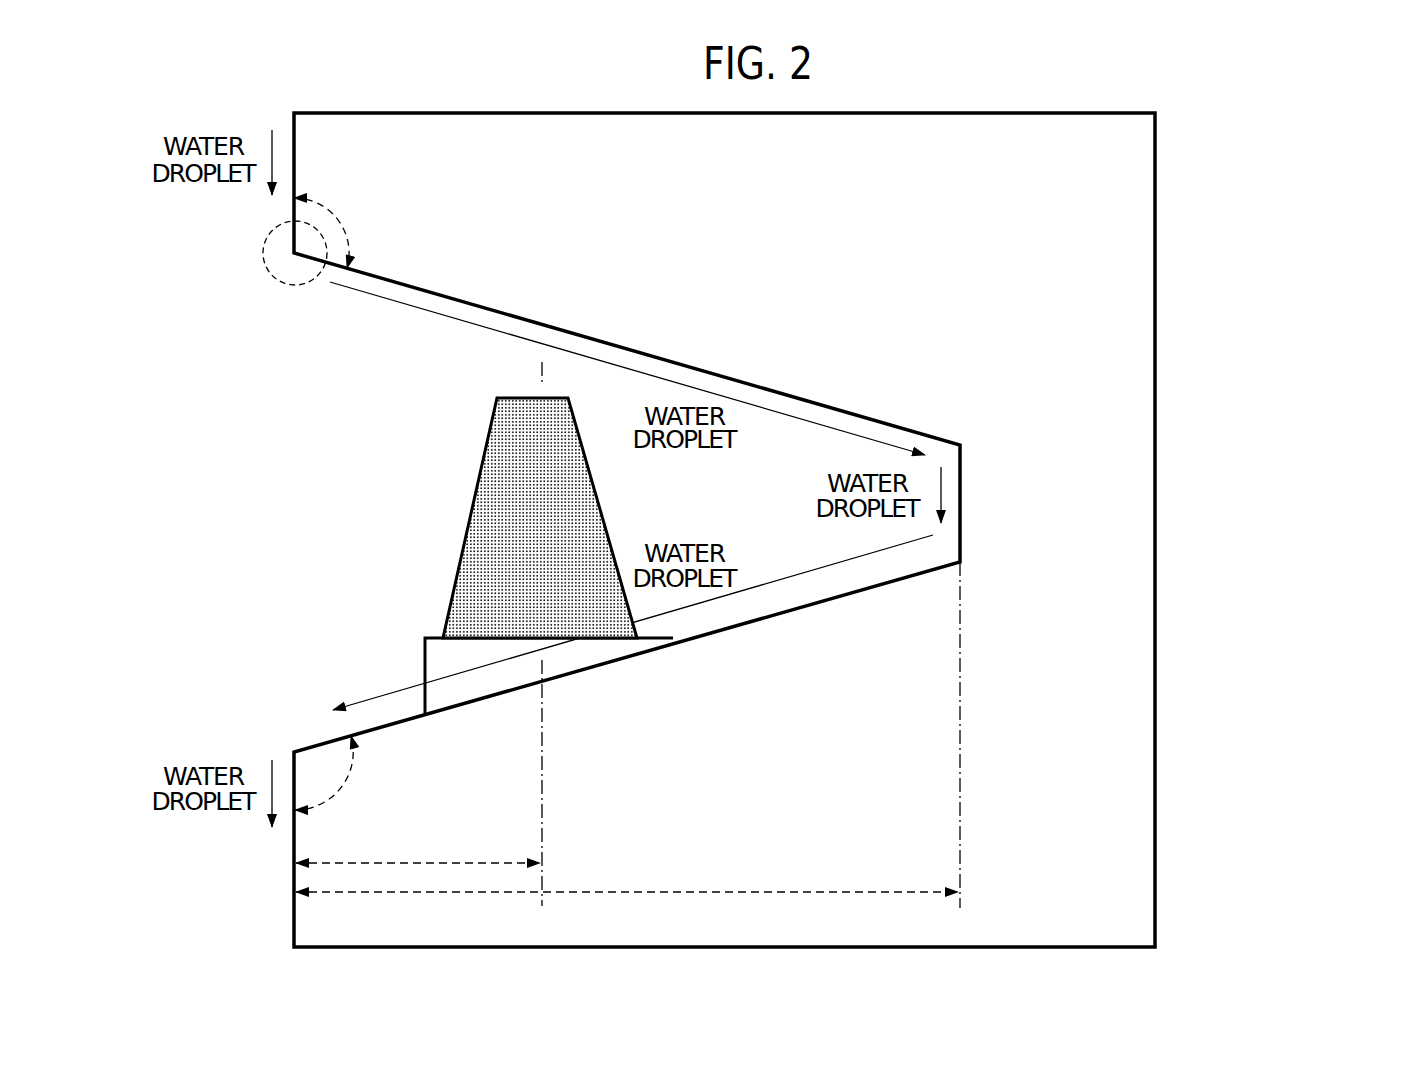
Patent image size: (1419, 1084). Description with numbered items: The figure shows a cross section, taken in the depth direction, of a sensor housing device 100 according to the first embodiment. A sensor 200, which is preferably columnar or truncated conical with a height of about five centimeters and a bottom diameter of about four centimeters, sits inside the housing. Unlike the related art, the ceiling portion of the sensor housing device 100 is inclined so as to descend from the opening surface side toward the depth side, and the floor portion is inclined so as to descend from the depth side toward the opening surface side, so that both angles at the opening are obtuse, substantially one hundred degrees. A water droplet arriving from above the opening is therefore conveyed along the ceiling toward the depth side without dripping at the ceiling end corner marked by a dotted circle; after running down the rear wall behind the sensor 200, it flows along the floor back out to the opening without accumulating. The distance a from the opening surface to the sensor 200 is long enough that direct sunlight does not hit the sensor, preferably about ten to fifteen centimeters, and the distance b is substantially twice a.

The sensor housing device 100 is at (1155, 527).
The sensor 200 is at (485, 452).
The distance from the opening surface to the sensor a is at (418, 848).
The distance b is at (627, 876).